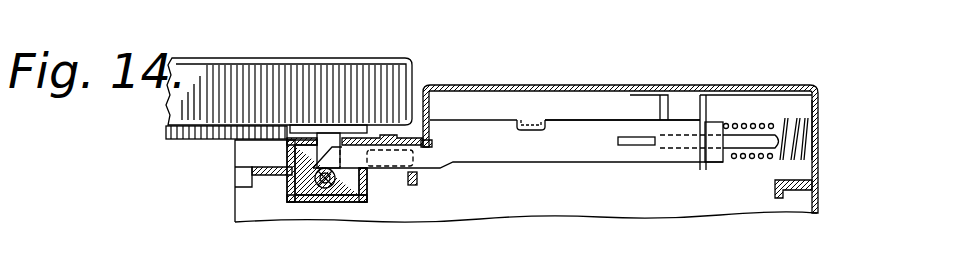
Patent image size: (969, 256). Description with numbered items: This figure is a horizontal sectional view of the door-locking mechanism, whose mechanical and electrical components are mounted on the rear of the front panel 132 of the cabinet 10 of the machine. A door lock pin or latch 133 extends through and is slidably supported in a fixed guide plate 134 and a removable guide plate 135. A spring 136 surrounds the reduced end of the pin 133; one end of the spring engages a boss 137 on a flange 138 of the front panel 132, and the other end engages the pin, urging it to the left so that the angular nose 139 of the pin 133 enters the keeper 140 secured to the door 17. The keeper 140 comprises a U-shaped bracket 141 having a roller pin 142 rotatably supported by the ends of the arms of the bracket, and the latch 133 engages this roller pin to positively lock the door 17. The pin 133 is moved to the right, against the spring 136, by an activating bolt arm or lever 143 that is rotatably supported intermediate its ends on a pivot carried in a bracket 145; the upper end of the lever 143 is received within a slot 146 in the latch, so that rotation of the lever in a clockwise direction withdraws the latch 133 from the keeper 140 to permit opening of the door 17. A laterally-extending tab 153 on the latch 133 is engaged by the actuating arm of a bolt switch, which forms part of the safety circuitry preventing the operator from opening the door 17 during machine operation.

The cabinet 10 is at (526, 121).
The door 17 is at (284, 58).
The front panel 132 is at (540, 85).
The door lock pin 133 is at (537, 153).
The fixed guide plate 134 is at (699, 170).
The removable guide plate 135 is at (417, 182).
The spring 136 is at (787, 120).
The boss 137 is at (818, 132).
The flange 138 is at (818, 170).
The angular nose 139 is at (333, 146).
The keeper 140 is at (345, 122).
The U-shaped bracket 141 is at (313, 148).
The roller pin 142 is at (333, 188).
The activating bolt arm 143 is at (633, 137).
The bracket 145 is at (680, 87).
The slot 146 is at (640, 147).
The laterally-extending tab 153 is at (527, 118).